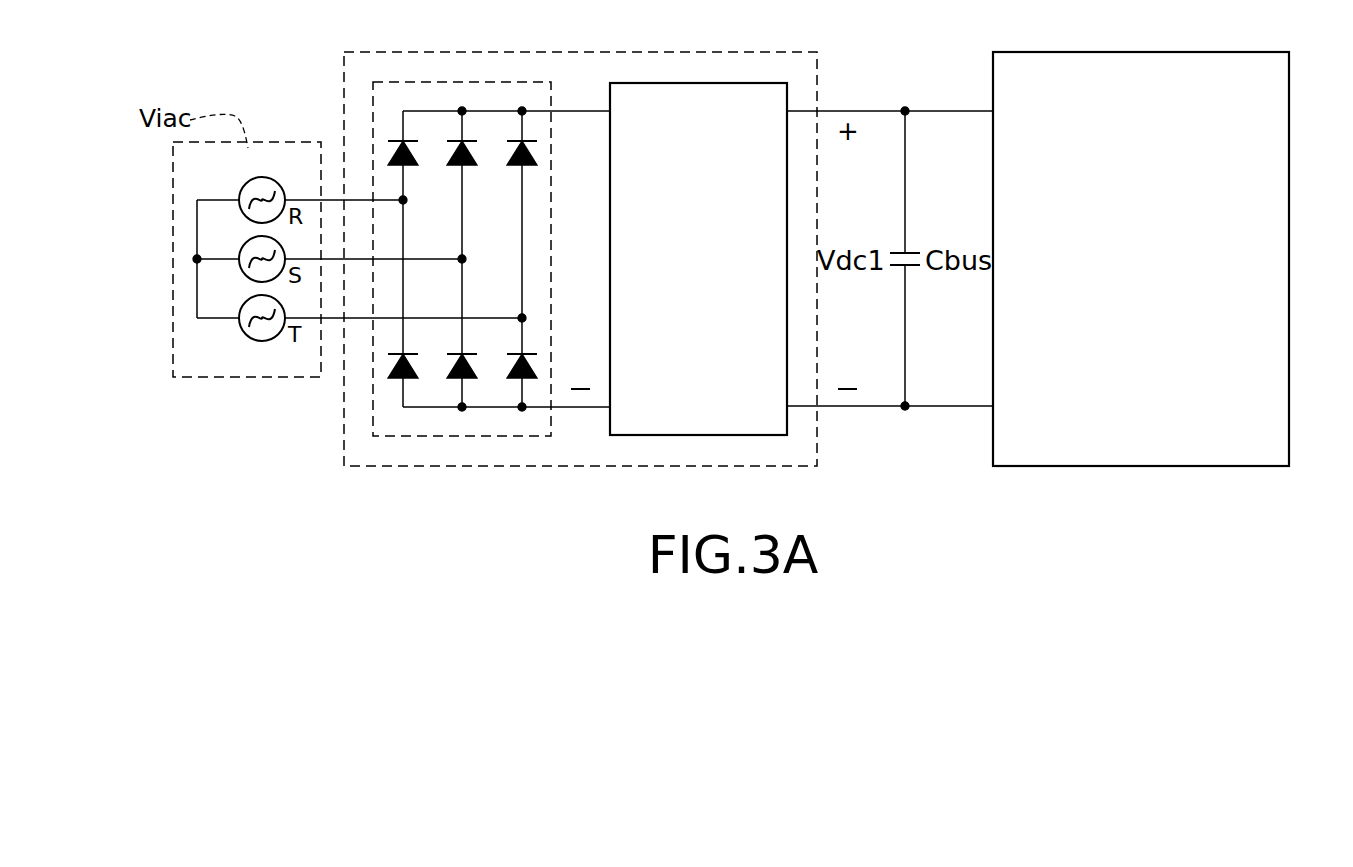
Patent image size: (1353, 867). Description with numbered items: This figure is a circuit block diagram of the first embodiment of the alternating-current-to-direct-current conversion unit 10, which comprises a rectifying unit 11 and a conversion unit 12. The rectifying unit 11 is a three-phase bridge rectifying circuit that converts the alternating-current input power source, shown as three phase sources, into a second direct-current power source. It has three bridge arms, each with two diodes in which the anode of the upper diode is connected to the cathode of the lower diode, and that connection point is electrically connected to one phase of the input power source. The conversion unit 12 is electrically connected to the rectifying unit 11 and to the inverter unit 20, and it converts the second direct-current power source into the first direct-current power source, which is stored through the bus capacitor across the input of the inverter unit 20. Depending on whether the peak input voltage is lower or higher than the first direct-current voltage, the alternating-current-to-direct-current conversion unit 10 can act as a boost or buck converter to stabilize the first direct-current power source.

The alternating-current-to-direct-current conversion unit 10 is at (610, 58).
The rectifying unit 11 is at (463, 88).
The conversion unit 12 is at (698, 88).
The inverter unit 20 is at (1141, 58).